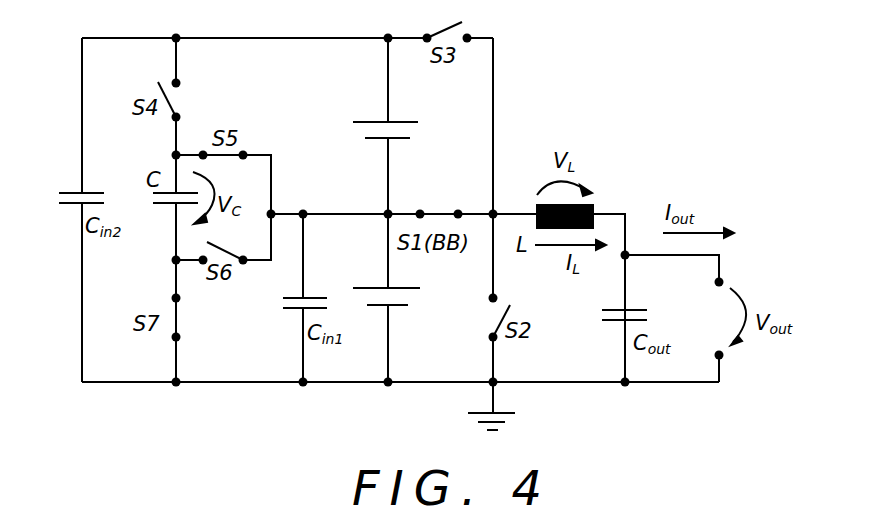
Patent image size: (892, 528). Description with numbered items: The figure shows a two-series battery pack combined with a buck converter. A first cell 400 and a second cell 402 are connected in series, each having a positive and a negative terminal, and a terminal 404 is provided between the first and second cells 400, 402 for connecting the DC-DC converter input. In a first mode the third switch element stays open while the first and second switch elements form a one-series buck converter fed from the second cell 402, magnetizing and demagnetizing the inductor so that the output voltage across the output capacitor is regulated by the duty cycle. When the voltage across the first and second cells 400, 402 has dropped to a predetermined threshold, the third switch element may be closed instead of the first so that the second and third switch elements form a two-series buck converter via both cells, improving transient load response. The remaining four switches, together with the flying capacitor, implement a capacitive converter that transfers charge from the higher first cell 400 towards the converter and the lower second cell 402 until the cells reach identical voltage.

The first cell 400 is at (350, 128).
The second cell 402 is at (393, 315).
The terminal 404 is at (397, 213).